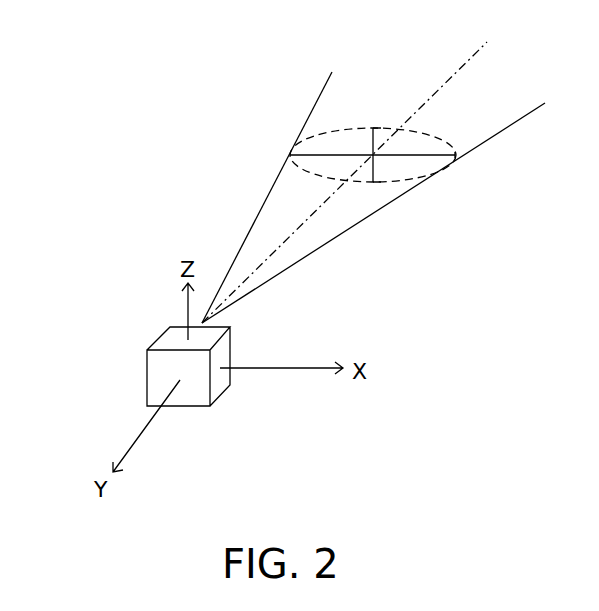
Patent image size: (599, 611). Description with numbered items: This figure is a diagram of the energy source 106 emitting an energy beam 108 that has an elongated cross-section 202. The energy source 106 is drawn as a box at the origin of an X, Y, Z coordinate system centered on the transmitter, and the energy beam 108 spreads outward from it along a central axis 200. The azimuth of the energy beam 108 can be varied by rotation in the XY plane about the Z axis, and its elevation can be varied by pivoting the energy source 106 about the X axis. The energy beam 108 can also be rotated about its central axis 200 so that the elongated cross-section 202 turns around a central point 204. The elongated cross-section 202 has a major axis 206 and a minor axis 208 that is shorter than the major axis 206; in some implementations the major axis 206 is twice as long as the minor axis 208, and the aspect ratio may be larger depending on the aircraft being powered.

The energy source 106 is at (147, 378).
The energy beam 108 is at (249, 230).
The central axis 200 is at (433, 93).
The elongated cross-section 202 is at (329, 130).
The central point 204 is at (375, 158).
The major axis 206 is at (338, 153).
The minor axis 208 is at (398, 131).